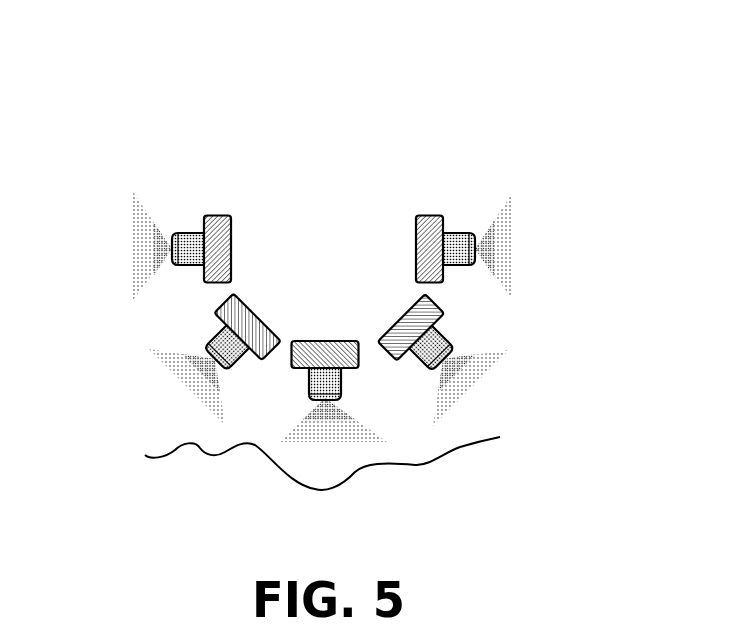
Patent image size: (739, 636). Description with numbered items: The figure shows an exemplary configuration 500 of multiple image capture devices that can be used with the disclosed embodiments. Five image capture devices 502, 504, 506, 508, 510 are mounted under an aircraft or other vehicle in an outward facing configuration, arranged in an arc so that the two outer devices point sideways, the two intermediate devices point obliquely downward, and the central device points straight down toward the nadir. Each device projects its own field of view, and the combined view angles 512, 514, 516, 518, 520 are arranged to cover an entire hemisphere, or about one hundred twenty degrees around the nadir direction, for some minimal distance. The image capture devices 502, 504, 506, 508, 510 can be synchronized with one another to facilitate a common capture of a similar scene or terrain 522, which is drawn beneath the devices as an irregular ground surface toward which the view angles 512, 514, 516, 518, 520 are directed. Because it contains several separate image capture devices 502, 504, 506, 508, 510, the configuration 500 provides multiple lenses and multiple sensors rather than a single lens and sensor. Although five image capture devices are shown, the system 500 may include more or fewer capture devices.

The configuration 500 is at (601, 146).
The image capture device 502 is at (210, 214).
The image capture device 504 is at (256, 317).
The image capture device 506 is at (318, 342).
The image capture device 508 is at (398, 317).
The image capture device 510 is at (425, 214).
The view angle 512 is at (128, 227).
The view angle 514 is at (170, 378).
The view angle 516 is at (321, 433).
The view angle 518 is at (490, 375).
The view angle 520 is at (513, 247).
The scene or terrain 522 is at (465, 447).